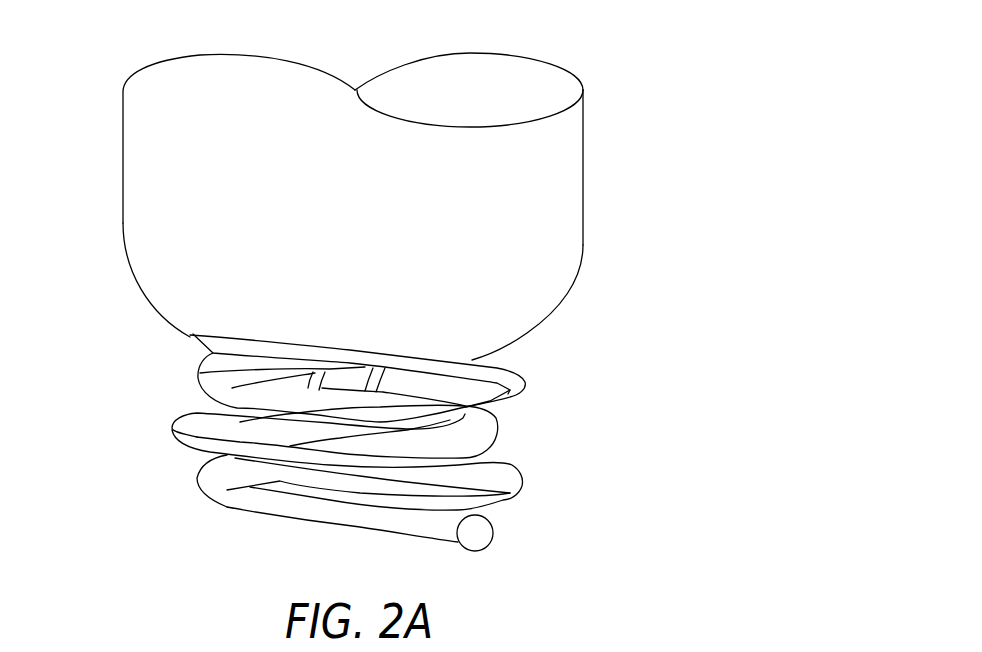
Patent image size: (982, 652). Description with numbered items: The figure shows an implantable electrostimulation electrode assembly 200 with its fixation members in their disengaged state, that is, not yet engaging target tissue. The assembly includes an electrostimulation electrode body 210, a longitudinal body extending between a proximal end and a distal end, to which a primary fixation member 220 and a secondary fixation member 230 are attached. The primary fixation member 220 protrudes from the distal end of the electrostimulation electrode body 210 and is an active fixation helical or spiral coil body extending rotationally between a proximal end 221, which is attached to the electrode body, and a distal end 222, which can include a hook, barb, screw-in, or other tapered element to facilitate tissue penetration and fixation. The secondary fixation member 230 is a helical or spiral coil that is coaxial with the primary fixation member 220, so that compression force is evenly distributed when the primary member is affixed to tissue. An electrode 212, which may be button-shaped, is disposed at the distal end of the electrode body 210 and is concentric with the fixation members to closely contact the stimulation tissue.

The implantable electrostimulation electrode assembly 200 is at (582, 49).
The electrostimulation electrode body 210 is at (122, 153).
The electrode 212 is at (200, 376).
The primary fixation member 220 is at (214, 506).
The proximal end 221 is at (346, 347).
The distal end 222 is at (468, 553).
The secondary fixation member 230 is at (516, 477).